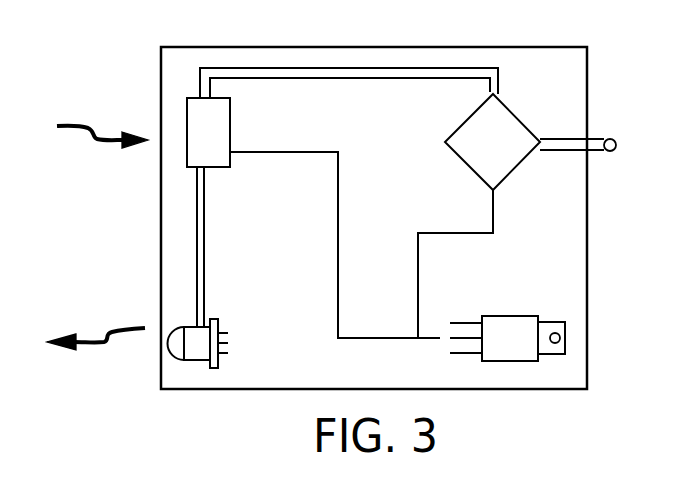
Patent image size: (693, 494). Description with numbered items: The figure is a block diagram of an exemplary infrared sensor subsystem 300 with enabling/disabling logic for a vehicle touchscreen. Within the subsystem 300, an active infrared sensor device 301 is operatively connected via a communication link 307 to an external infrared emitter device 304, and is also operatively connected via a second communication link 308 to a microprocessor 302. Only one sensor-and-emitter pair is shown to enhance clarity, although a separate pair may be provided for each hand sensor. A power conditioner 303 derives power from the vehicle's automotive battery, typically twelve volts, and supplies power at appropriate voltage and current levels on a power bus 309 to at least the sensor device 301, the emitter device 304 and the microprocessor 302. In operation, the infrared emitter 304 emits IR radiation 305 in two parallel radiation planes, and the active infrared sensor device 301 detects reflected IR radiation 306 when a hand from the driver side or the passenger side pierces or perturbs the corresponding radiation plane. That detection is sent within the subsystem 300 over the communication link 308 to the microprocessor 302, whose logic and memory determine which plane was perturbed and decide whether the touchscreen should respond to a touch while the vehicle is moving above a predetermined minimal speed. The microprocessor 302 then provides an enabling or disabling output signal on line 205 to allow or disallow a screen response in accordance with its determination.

The infrared sensor subsystem 300 is at (362, 21).
The active infrared sensor device 301 is at (230, 125).
The microprocessor 302 is at (517, 112).
The power conditioner 303 is at (495, 316).
The external infrared emitter device 304 is at (220, 362).
The IR radiation 305 is at (110, 330).
The reflected IR radiation 306 is at (92, 140).
The communication link 307 is at (197, 220).
The communication link 308 is at (413, 68).
The power bus 309 is at (443, 233).
The line 205 is at (598, 138).